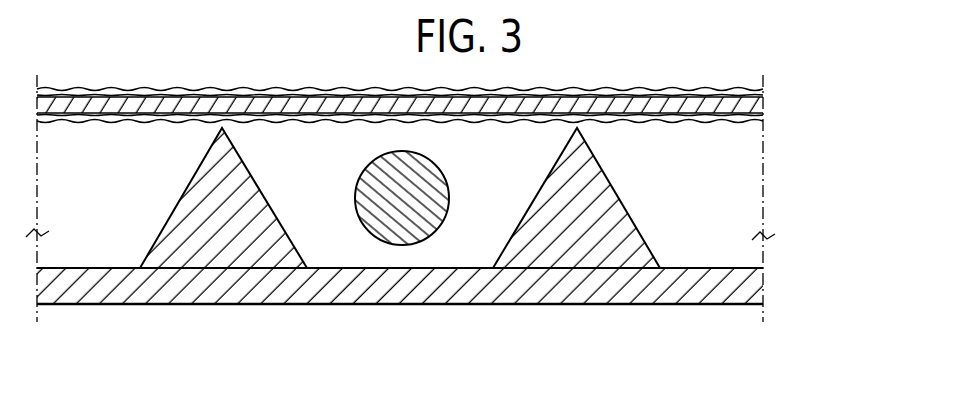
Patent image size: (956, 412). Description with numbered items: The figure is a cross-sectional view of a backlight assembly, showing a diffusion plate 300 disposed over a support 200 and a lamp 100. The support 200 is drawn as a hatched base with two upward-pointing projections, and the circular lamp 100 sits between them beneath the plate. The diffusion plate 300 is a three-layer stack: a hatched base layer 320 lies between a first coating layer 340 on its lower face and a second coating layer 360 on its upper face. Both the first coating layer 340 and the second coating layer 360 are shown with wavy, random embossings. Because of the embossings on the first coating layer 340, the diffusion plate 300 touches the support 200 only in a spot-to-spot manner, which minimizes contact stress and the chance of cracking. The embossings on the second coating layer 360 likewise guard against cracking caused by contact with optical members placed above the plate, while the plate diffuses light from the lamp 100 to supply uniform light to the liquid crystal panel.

The lamp 100 is at (393, 232).
The support 200 is at (752, 290).
The diffusion plate 300 is at (477, 112).
The base layer 320 is at (763, 110).
The first coating layer 340 is at (763, 117).
The second coating layer 360 is at (763, 93).